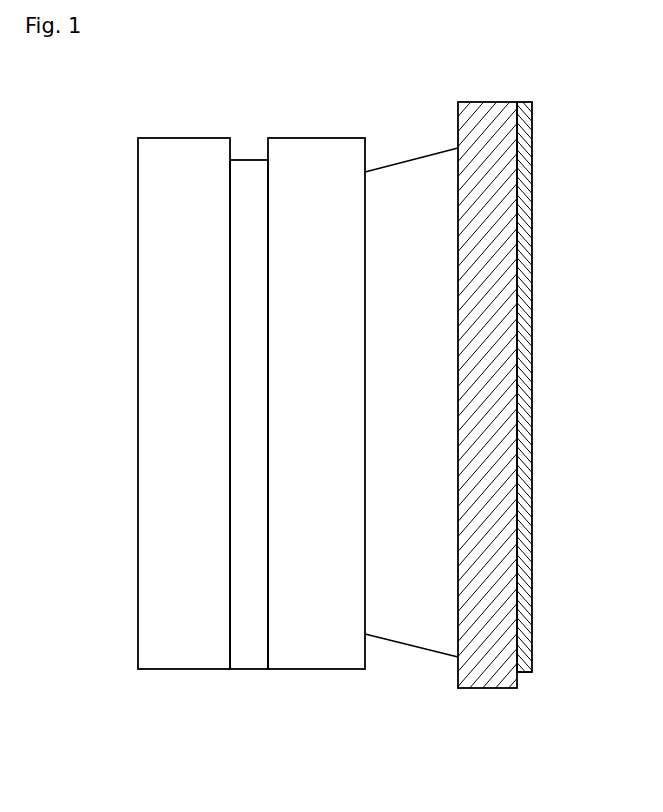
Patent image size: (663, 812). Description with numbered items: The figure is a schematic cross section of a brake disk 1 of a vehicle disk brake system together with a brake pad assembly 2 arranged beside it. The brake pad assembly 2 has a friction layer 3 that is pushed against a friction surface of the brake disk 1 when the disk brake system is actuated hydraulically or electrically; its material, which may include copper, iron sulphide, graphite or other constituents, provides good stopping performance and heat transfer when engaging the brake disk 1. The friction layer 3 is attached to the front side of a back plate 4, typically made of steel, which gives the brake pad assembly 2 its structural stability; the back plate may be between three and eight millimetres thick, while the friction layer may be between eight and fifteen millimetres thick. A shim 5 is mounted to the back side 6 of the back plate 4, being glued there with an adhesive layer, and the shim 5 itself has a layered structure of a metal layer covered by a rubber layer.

The brake disk 1 is at (305, 147).
The brake pad assembly 2 is at (413, 700).
The friction layer 3 is at (425, 170).
The back plate 4 is at (483, 680).
The shim 5 is at (533, 386).
The back side of the back plate 6 is at (521, 681).